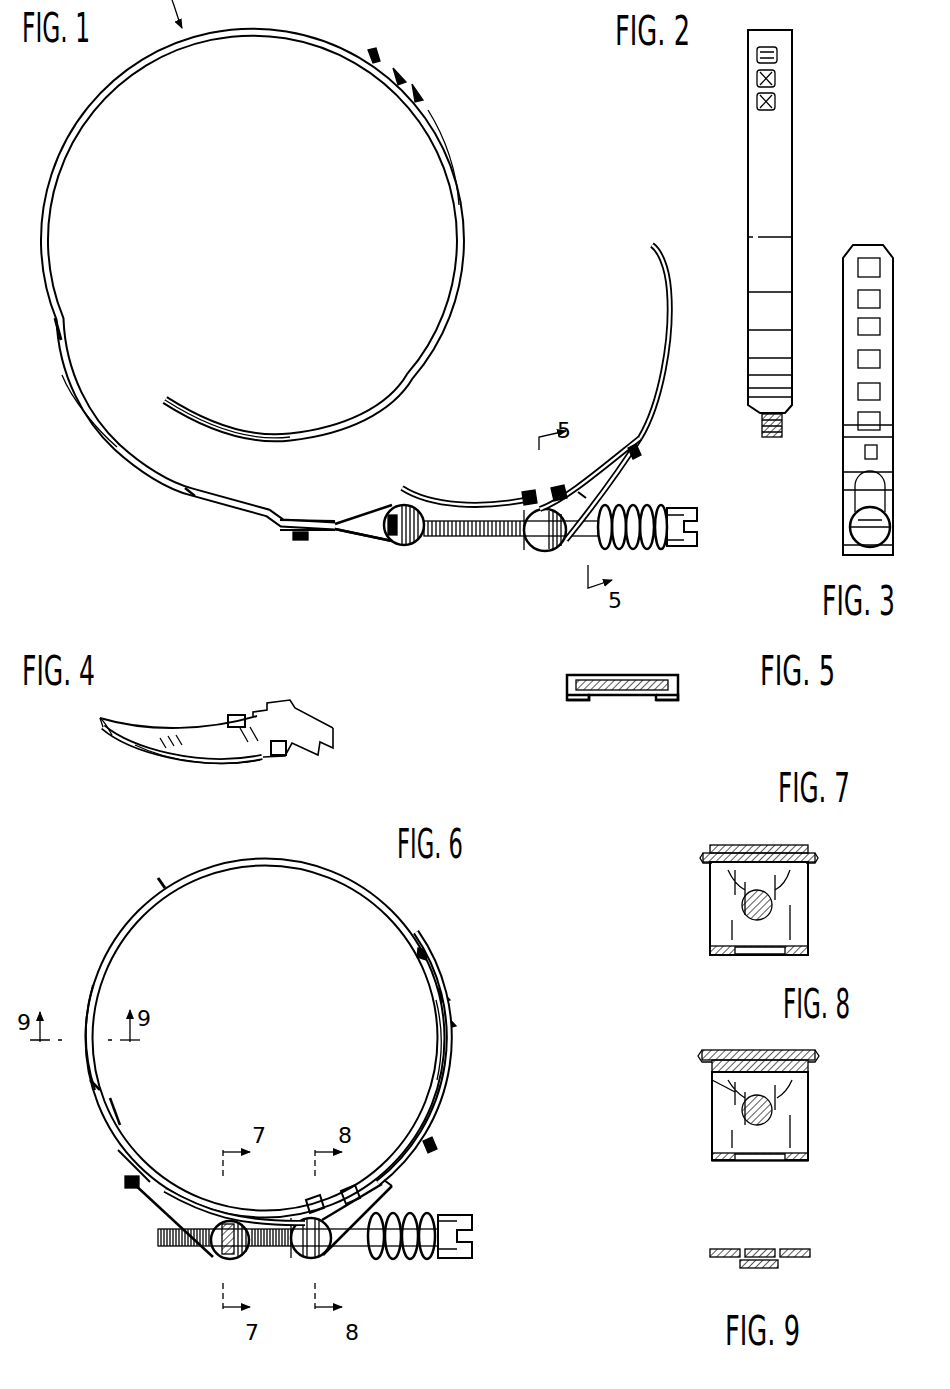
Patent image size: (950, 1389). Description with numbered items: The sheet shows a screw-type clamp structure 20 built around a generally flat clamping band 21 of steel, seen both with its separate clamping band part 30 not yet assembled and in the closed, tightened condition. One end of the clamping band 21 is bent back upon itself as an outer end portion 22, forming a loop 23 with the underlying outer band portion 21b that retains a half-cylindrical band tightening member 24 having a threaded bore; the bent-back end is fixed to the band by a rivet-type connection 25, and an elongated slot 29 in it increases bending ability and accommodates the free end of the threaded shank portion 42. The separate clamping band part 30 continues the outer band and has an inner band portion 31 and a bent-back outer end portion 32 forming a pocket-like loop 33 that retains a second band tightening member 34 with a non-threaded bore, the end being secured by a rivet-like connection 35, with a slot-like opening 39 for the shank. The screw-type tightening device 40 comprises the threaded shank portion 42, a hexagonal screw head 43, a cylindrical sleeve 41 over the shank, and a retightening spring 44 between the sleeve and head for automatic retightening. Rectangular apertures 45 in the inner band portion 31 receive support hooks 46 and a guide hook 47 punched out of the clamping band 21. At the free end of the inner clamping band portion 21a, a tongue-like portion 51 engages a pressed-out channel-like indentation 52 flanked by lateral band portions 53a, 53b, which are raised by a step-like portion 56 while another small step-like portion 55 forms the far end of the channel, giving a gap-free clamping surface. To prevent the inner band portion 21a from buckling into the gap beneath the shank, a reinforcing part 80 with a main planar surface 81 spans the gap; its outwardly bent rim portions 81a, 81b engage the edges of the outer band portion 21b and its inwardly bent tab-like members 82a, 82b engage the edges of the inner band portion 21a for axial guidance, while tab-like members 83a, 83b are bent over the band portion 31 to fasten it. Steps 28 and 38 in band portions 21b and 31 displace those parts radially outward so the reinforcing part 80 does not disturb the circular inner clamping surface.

In FIG. 6, the screw-type clamp structure 20 is at (107, 893).
In FIG. 1, the clamping band 21 is at (223, 37).
In FIG. 6, the clamping band 21 is at (270, 860).
In FIG. 1, the inner clamping band portion 21a is at (462, 165).
In FIG. 6, the inner clamping band portion 21a is at (437, 1040).
In FIG. 8, the inner clamping band portion 21a is at (753, 1050).
In FIG. 1, the outer band portion 21b is at (346, 522).
In FIG. 7, the outer band portion 21b is at (740, 845).
In FIG. 1, the bent-back outer clamping band end portion 22 is at (367, 540).
In FIG. 6, the bent-back outer clamping band end portion 22 is at (213, 1253).
In FIG. 7, the bent-back outer clamping band end portion 22 is at (722, 956).
In FIG. 1, the loop 23 is at (414, 547).
In FIG. 6, the loop 23 is at (240, 1259).
In FIG. 7, the loop 23 is at (810, 932).
In FIG. 1, the half-cylindrical band tightening member 24 is at (394, 546).
In FIG. 6, the half-cylindrical band tightening member 24 is at (226, 1255).
In FIG. 1, the rivet-type connection 25 is at (300, 543).
In FIG. 6, the rivet-type connection 25 is at (128, 1187).
In FIG. 1, the step 28 is at (276, 520).
In FIG. 6, the step 28 is at (140, 1150).
In FIG. 7, the elongated slot 29 is at (758, 956).
In FIG. 1, the separate clamping band part 30 is at (655, 431).
In FIG. 6, the separate clamping band part 30 is at (393, 1193).
In FIG. 1, the inner band portion 31 is at (666, 300).
In FIG. 3, the inner band portion 31 is at (856, 343).
In FIG. 6, the inner band portion 31 is at (450, 1065).
In FIG. 8, the inner band portion 31 is at (722, 1082).
In FIG. 1, the bent-back outer end portion 32 is at (600, 494).
In FIG. 3, the bent-back outer end portion 32 is at (853, 478).
In FIG. 6, the bent-back outer end portion 32 is at (386, 1204).
In FIG. 8, the bent-back outer end portion 32 is at (722, 1162).
In FIG. 1, the pocket-like loop 33 is at (540, 553).
In FIG. 6, the pocket-like loop 33 is at (318, 1259).
In FIG. 8, the pocket-like loop 33 is at (808, 1140).
In FIG. 1, the half-cylindrical band tightening member 34 is at (528, 548).
In FIG. 6, the half-cylindrical band tightening member 34 is at (308, 1258).
In FIG. 1, the rivet-like connection 35 is at (641, 458).
In FIG. 3, the rivet-like connection 35 is at (862, 455).
In FIG. 6, the rivet-like connection 35 is at (438, 1146).
In FIG. 1, the step 38 is at (583, 493).
In FIG. 6, the step 38 is at (385, 1186).
In FIG. 8, the slot-like opening 39 is at (764, 1162).
In FIG. 1, the screw-type tightening device 40 is at (678, 550).
In FIG. 6, the screw-type tightening device 40 is at (473, 1263).
In FIG. 1, the cylindrical sleeve 41 is at (573, 540).
In FIG. 6, the cylindrical sleeve 41 is at (353, 1250).
In FIG. 1, the threaded shank portion 42 is at (478, 540).
In FIG. 6, the threaded shank portion 42 is at (285, 1250).
In FIG. 7, the threaded shank portion 42 is at (770, 902).
In FIG. 8, the threaded shank portion 42 is at (770, 1108).
In FIG. 1, the screw head 43 is at (690, 510).
In FIG. 3, the screw head 43 is at (852, 525).
In FIG. 6, the screw head 43 is at (470, 1217).
In FIG. 1, the retightening spring 44 is at (651, 512).
In FIG. 6, the retightening spring 44 is at (421, 1260).
In FIG. 3, the rectangular apertures 45 is at (857, 327).
In FIG. 1, the support hooks 46 is at (418, 95).
In FIG. 2, the support hooks 46 is at (776, 101).
In FIG. 6, the support hooks 46 is at (452, 1022).
In FIG. 1, the guide hook 47 is at (380, 52).
In FIG. 2, the guide hook 47 is at (778, 53).
In FIG. 6, the guide hook 47 is at (430, 956).
In FIG. 1, the tongue-like portion 51 is at (217, 420).
In FIG. 2, the tongue-like portion 51 is at (783, 428).
In FIG. 6, the tongue-like portion 51 is at (113, 1107).
In FIG. 9, the tongue-like portion 51 is at (759, 1248).
In FIG. 1, the channel-like indentation 52 is at (118, 447).
In FIG. 6, the channel-like indentation 52 is at (88, 998).
In FIG. 9, the channel-like indentation 52 is at (757, 1269).
In FIG. 9, the lateral band portion 53a is at (718, 1248).
In FIG. 9, the lateral band portion 53b is at (803, 1248).
In FIG. 1, the step-like portion 55 is at (58, 322).
In FIG. 6, the step-like portion 55 is at (162, 882).
In FIG. 1, the step-like portion 56 is at (188, 494).
In FIG. 6, the step-like portion 56 is at (92, 1082).
In FIG. 4, the reinforcing part 80 is at (250, 695).
In FIG. 4, the main planar surface 81 is at (172, 735).
In FIG. 5, the main planar surface 81 is at (620, 677).
In FIG. 7, the main planar surface 81 is at (812, 885).
In FIG. 8, the main planar surface 81 is at (812, 1080).
In FIG. 1, the outwardly bent rim portion 81a is at (453, 492).
In FIG. 4, the outwardly bent rim portion 81a is at (206, 764).
In FIG. 6, the outwardly bent rim portion 81a is at (240, 1212).
In FIG. 7, the outwardly bent rim portion 81a is at (818, 858).
In FIG. 4, the outwardly bent rim portion 81b is at (115, 738).
In FIG. 7, the outwardly bent rim portion 81b is at (703, 858).
In FIG. 1, the inwardly bent tab-like member 82a is at (527, 491).
In FIG. 4, the inwardly bent tab-like member 82a is at (284, 758).
In FIG. 6, the inwardly bent tab-like member 82a is at (310, 1202).
In FIG. 8, the inwardly bent tab-like member 82a is at (819, 1056).
In FIG. 4, the inwardly bent tab-like member 82b is at (232, 716).
In FIG. 8, the inwardly bent tab-like member 82b is at (702, 1055).
In FIG. 1, the tab-like member 83a is at (560, 487).
In FIG. 4, the tab-like member 83a is at (334, 740).
In FIG. 5, the tab-like member 83a is at (680, 684).
In FIG. 6, the tab-like member 83a is at (350, 1190).
In FIG. 4, the tab-like member 83b is at (270, 708).
In FIG. 5, the tab-like member 83b is at (568, 684).